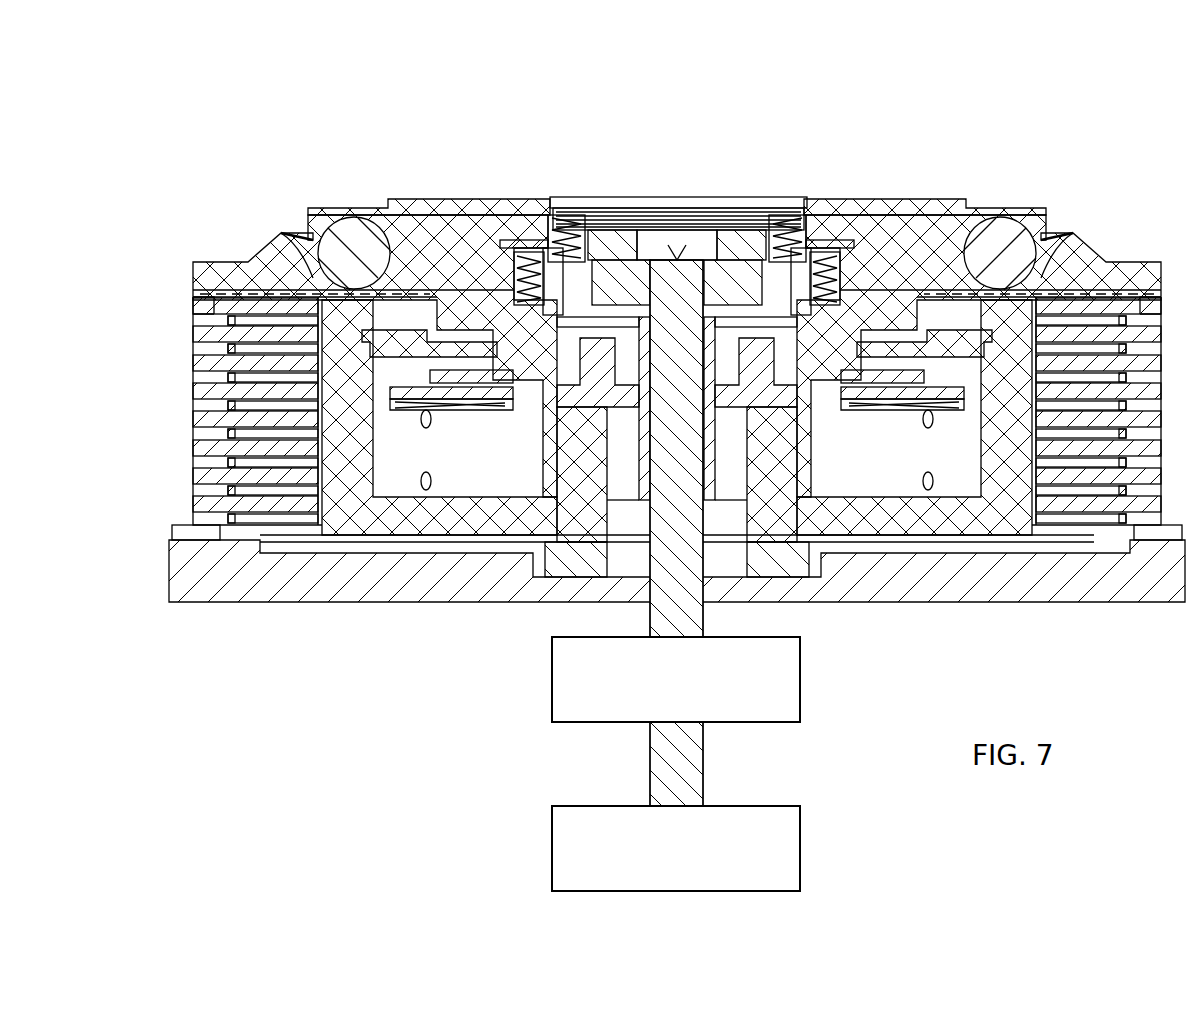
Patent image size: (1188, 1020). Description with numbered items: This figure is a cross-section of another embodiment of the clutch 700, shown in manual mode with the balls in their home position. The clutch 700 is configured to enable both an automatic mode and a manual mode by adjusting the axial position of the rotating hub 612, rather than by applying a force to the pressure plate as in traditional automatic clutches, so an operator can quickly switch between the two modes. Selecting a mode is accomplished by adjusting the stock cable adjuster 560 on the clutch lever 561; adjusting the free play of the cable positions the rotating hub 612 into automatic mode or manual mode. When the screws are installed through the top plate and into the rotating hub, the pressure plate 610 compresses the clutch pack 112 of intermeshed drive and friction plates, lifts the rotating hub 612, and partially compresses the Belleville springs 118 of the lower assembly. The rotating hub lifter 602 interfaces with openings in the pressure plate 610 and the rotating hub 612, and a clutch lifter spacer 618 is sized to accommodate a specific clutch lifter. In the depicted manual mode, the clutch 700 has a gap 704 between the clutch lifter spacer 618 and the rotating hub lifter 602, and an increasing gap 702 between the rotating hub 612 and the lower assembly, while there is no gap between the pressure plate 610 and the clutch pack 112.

The clutch 700 is at (920, 107).
The pressure plate 610 is at (269, 278).
The clutch pack 112 is at (192, 522).
The rotating hub 612 is at (482, 318).
The increasing gap 702 is at (432, 337).
The Belleville spring 118 is at (450, 398).
The rotating hub lifter 602 is at (587, 305).
The clutch lifter spacer 618 is at (750, 250).
The gap 704 is at (717, 230).
The cable adjuster 560 is at (657, 696).
The clutch lever 561 is at (657, 866).